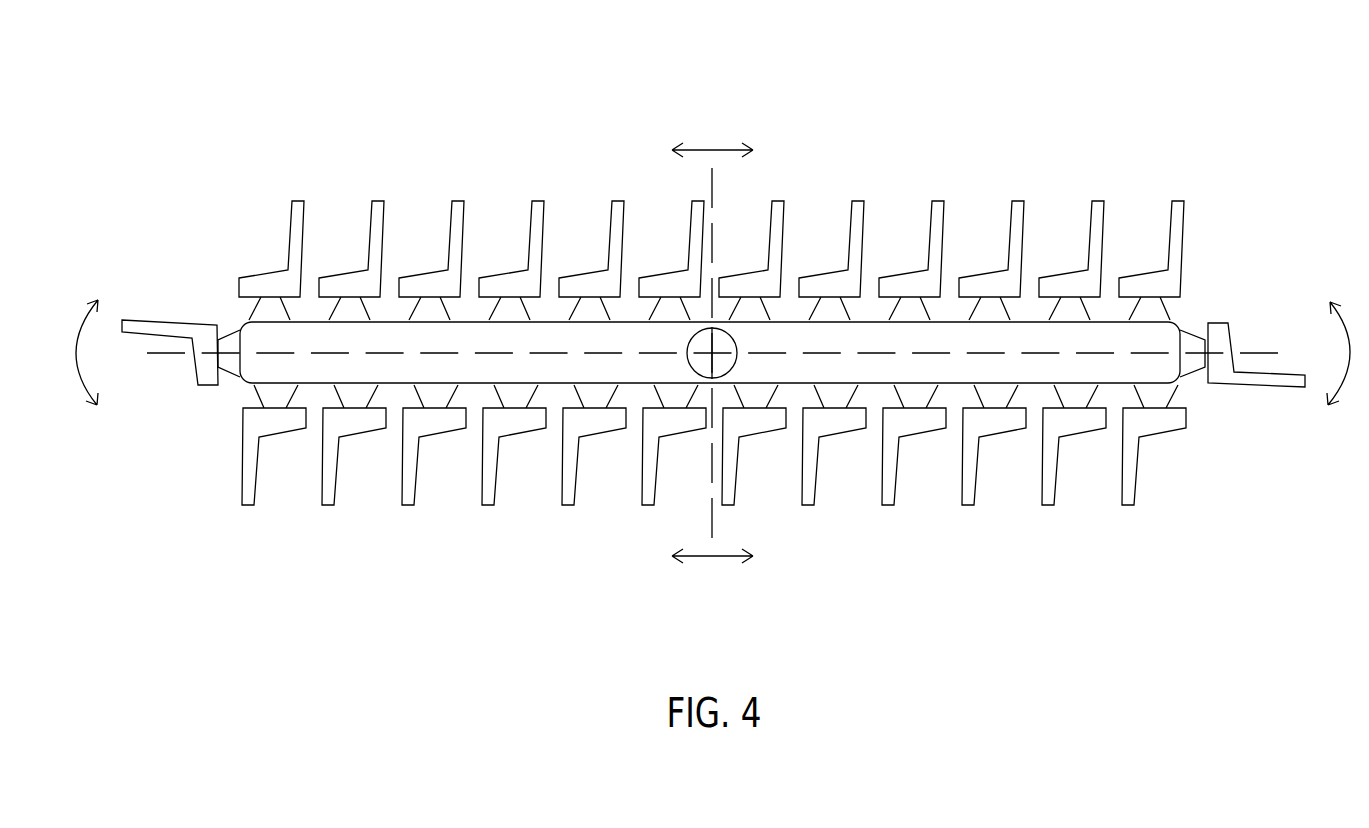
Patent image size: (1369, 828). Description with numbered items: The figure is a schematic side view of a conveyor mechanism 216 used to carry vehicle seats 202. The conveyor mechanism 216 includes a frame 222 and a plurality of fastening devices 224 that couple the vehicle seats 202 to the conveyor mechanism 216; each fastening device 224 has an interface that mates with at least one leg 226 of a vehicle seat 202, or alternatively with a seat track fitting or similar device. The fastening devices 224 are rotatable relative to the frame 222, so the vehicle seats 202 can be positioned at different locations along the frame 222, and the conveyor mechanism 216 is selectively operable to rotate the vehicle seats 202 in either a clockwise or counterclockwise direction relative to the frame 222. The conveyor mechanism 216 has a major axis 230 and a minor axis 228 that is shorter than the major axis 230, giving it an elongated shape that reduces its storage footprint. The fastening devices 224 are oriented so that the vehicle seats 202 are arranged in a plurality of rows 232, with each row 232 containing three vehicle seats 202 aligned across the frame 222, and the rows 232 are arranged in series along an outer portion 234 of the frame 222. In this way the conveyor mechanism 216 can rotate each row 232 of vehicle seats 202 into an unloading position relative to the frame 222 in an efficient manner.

The vehicle seats 202 is at (1102, 200).
The conveyor mechanism 216 is at (1062, 110).
The frame 222 is at (1110, 322).
The fastening devices 224 is at (1201, 278).
The leg 226 is at (1188, 337).
The minor axis 228 is at (713, 181).
The major axis 230 is at (1262, 352).
The rows 232 is at (535, 168).
The outer portion 234 is at (197, 235).